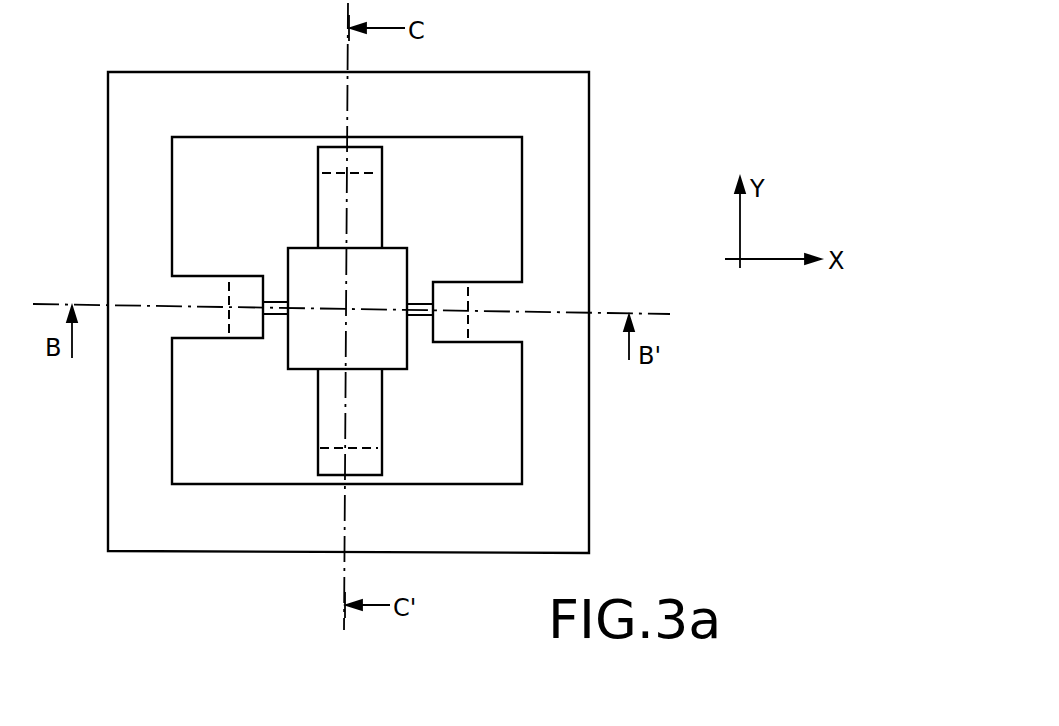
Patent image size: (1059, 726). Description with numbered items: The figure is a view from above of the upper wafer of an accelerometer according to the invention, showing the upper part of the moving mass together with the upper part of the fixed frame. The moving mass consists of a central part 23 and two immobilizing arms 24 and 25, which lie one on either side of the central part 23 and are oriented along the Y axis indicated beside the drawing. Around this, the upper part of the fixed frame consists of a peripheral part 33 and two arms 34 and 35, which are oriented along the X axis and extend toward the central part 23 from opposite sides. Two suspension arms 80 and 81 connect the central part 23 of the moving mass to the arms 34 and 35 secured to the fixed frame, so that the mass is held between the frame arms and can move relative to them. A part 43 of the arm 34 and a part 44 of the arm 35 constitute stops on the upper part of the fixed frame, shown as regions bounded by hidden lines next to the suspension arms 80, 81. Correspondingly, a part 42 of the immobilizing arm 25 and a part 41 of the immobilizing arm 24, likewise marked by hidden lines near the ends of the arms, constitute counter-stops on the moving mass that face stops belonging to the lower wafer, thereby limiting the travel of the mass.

The central part 23 is at (388, 263).
The immobilizing arm 24 is at (372, 432).
The immobilizing arm 25 is at (365, 195).
The peripheral part 33 is at (580, 195).
The arm 34 is at (204, 325).
The arm 35 is at (468, 320).
The counter-stop part 41 is at (325, 458).
The counter-stop part 42 is at (327, 162).
The stop part 43 is at (248, 286).
The stop part 44 is at (450, 292).
The suspension arm 80 is at (280, 317).
The suspension arm 81 is at (422, 318).